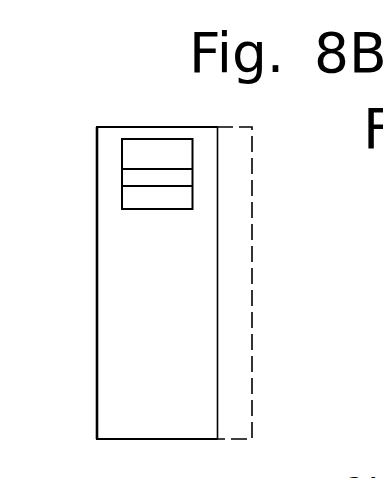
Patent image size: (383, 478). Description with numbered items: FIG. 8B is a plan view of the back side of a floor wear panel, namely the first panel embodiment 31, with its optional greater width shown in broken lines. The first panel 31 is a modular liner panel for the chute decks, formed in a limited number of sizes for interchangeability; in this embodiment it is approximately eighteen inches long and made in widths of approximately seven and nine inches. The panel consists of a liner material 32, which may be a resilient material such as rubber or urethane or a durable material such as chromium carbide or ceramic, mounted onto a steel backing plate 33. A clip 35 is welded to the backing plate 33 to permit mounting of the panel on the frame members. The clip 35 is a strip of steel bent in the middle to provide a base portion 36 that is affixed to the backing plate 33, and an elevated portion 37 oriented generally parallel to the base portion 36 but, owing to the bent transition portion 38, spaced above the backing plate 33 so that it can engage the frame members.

The first panel embodiment 31 is at (256, 373).
The liner material 32 is at (125, 283).
The backing plate 33 is at (204, 321).
The clip 35 is at (185, 177).
The base portion 36 is at (138, 153).
The elevated portion 37 is at (148, 203).
The bent transition portion 38 is at (135, 177).